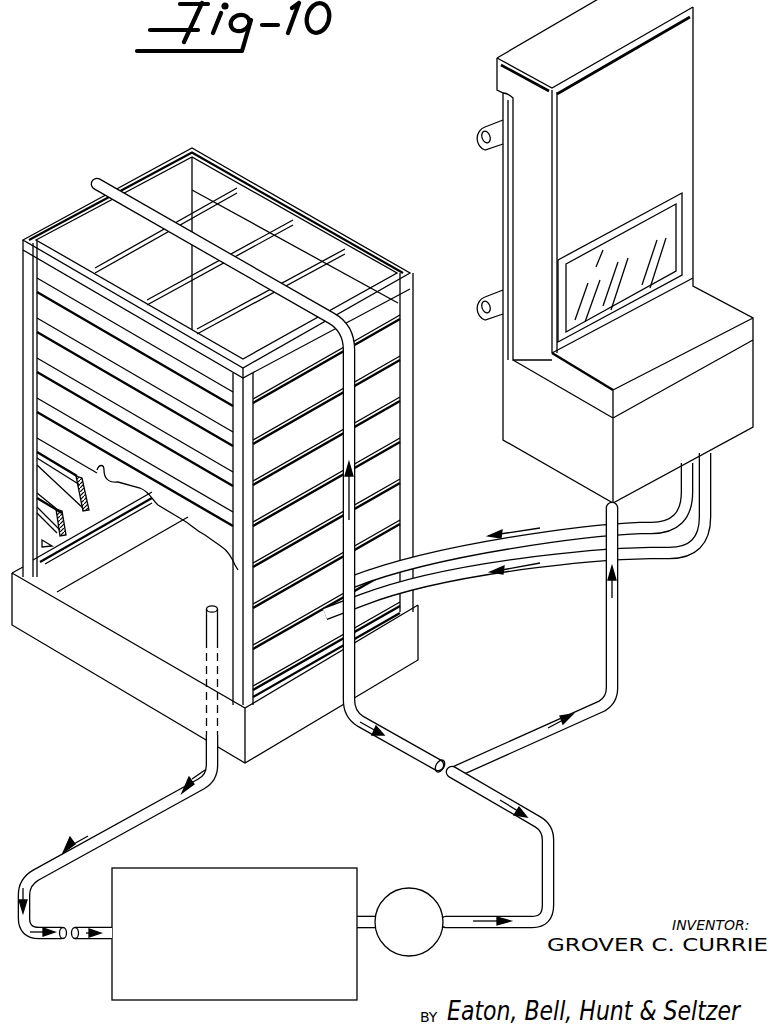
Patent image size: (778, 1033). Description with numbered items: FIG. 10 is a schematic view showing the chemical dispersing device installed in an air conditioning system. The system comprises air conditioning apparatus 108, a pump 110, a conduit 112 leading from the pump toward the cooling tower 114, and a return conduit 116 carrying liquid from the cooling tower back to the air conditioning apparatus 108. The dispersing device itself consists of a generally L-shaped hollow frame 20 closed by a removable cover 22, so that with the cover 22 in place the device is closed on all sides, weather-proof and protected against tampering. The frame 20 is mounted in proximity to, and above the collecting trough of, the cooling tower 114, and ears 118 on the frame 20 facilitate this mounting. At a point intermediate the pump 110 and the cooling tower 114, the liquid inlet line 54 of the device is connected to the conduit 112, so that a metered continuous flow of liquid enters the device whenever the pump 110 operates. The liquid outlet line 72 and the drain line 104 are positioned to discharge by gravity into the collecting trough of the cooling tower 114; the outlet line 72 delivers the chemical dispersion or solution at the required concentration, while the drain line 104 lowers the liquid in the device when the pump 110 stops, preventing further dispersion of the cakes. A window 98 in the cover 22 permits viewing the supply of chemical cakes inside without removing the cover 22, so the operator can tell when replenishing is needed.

The frame 20 is at (593, 251).
The cover 22 is at (693, 148).
The window 98 is at (665, 247).
The ears 118 is at (502, 122).
The cooling tower 114 is at (411, 416).
The liquid inlet line 54 is at (617, 650).
The liquid outlet line 72 is at (687, 485).
The drain line 104 is at (701, 522).
The return conduit 116 is at (130, 816).
The air conditioning apparatus 108 is at (258, 891).
The pump 110 is at (426, 889).
The conduit 112 is at (545, 860).